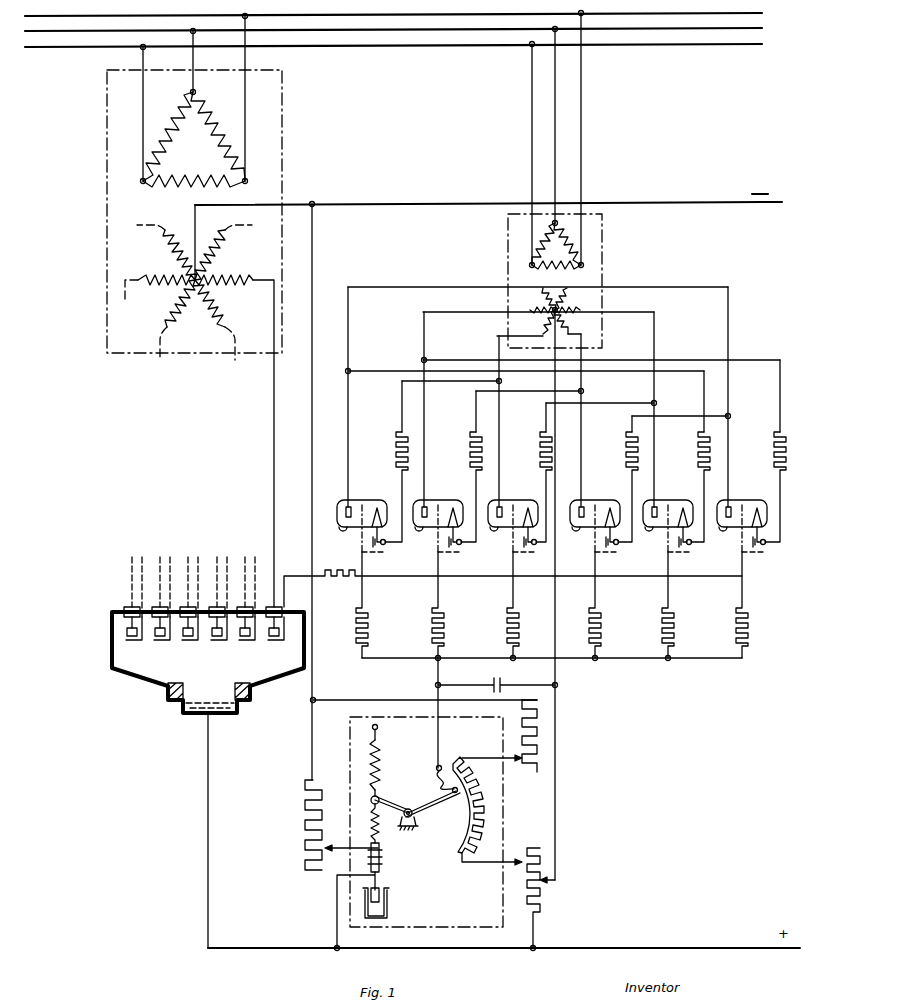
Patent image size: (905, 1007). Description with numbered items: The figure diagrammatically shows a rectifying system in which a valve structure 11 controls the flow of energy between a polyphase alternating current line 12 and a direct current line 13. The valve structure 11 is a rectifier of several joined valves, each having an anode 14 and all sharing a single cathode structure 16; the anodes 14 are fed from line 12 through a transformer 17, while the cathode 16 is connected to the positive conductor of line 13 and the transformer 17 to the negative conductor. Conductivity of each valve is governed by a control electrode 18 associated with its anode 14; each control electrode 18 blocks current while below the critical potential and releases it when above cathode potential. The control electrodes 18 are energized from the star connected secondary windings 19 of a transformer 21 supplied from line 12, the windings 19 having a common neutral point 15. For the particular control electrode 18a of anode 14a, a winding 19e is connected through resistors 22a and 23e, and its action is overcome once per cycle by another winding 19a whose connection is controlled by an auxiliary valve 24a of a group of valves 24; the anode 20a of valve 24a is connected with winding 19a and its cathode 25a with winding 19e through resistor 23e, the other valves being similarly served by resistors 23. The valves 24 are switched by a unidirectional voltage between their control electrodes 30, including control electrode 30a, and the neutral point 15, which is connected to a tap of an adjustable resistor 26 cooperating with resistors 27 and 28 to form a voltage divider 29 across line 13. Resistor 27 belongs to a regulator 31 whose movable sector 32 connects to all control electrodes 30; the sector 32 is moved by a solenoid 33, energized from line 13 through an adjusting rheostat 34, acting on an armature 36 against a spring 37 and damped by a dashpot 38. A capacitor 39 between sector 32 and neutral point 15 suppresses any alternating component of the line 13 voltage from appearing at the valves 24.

The valve structure 11 is at (142, 682).
The polyphase alternating current line 12 is at (397, 17).
The direct current line 13 is at (432, 204).
The anode 14 is at (153, 640).
The anode 14a is at (269, 641).
The neutral point 15 is at (557, 254).
The cathode structure 16 is at (192, 714).
The transformer 17 is at (283, 128).
The control electrode 18 is at (191, 641).
The control electrode 18a is at (287, 645).
The star connected secondary winding 19 is at (569, 311).
The winding 19a is at (584, 309).
The winding 19e is at (543, 292).
The anode 20a is at (658, 500).
The transformer 21 is at (569, 281).
The resistor 22a is at (343, 572).
The resistor 23 is at (472, 456).
The resistor 23e is at (702, 451).
The auxiliary valve 24 is at (426, 506).
The auxiliary valve 24a is at (692, 530).
The cathode 25a is at (682, 512).
The adjustable resistor 26 is at (537, 847).
The resistor 27 is at (471, 781).
The resistor 28 is at (528, 747).
The voltage divider 29 is at (390, 699).
The control electrode 30 is at (447, 509).
The control electrode 30a is at (665, 541).
The regulator 31 is at (352, 741).
The sector 32 is at (444, 812).
The solenoid 33 is at (383, 867).
The adjusting rheostat 34 is at (303, 801).
The armature 36 is at (407, 830).
The spring 37 is at (380, 761).
The dashpot 38 is at (391, 903).
The capacitor 39 is at (491, 685).